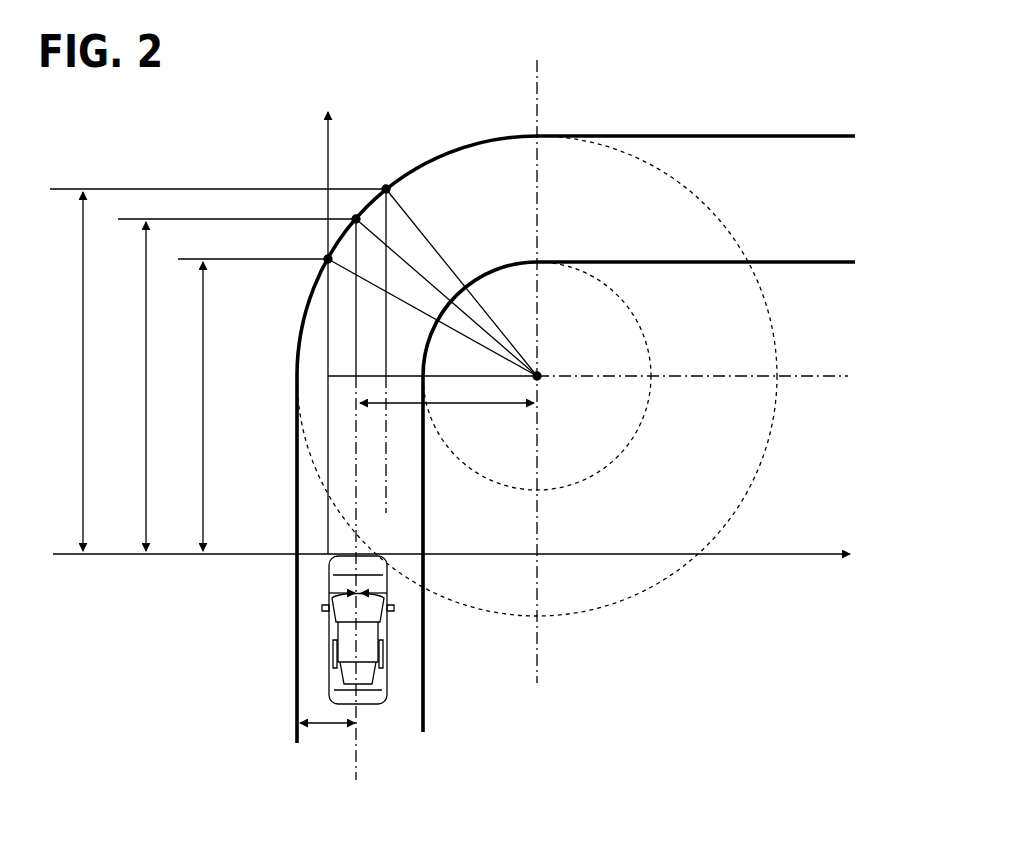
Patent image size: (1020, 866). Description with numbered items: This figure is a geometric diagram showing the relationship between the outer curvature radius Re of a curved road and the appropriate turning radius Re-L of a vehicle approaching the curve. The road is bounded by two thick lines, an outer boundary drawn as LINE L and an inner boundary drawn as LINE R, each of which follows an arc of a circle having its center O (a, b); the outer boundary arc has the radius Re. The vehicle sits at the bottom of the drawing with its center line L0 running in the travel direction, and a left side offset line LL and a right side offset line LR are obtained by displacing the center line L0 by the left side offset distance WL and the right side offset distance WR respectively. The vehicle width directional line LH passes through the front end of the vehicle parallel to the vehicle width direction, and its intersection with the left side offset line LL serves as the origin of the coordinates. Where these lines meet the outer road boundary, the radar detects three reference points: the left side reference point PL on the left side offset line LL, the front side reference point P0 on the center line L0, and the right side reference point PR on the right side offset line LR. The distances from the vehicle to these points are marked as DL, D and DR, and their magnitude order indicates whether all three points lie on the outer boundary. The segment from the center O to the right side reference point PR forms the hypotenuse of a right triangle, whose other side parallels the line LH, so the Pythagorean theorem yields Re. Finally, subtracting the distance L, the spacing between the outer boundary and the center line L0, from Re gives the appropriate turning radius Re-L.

The line L (outer boundary of the road) LINE L is at (576, 424).
The line R LINE R is at (639, 482).
The vehicle width directional line LH is at (730, 557).
The center O is at (569, 390).
The outer curvature radius Re is at (433, 281).
The left side reference point PL is at (328, 259).
The front side reference point P0 is at (356, 219).
The right side reference point PR is at (386, 189).
The distance D_R DR is at (69, 371).
The distance D is at (135, 386).
The distance D_L DL is at (189, 406).
The appropriate turning radius Re-L is at (447, 418).
The distance L is at (327, 740).
The center line L0 is at (358, 746).
The right side offset line LR is at (388, 512).
The left side offset line LL is at (327, 526).
The left side offset distance WL is at (330, 580).
The right side offset distance WR is at (386, 582).